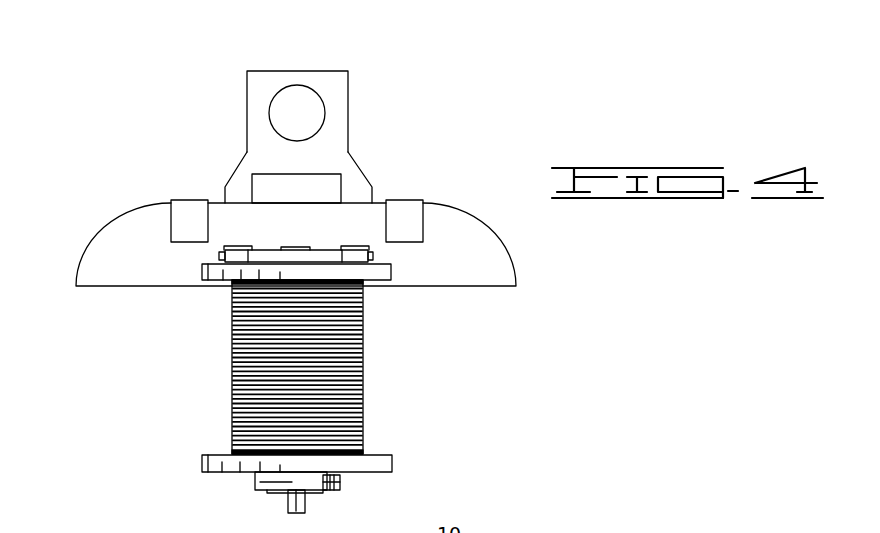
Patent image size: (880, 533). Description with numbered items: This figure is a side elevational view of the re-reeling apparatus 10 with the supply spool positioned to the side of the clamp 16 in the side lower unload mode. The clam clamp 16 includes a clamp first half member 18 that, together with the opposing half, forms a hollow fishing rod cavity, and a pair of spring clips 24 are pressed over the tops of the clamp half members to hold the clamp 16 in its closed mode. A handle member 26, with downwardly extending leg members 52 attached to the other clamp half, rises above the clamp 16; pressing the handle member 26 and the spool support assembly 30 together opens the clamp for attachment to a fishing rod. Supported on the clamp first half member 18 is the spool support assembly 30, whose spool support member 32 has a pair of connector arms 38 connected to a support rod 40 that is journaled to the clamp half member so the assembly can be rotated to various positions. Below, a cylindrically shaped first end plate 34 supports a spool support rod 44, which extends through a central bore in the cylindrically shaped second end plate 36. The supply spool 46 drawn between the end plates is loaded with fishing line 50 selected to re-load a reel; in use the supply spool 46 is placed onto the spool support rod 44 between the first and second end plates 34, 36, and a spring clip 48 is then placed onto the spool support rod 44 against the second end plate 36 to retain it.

The re-reeling apparatus 10 is at (212, 70).
The clam clamp 16 is at (80, 254).
The clamp first half member 18 is at (137, 223).
The spring clips 24 is at (190, 199).
The handle member 26 is at (320, 71).
The leg members 52 is at (370, 192).
The spool support assembly 30 is at (210, 291).
The spool support member 32 is at (262, 252).
The connector arms 38 is at (232, 246).
The support rod 40 is at (373, 256).
The first end plate 34 is at (387, 274).
The coil 46 is at (365, 372).
The fishing line 50 is at (243, 380).
The second end plate 36 is at (394, 464).
The spring clip 48 is at (260, 490).
The spool support rod 44 is at (305, 505).